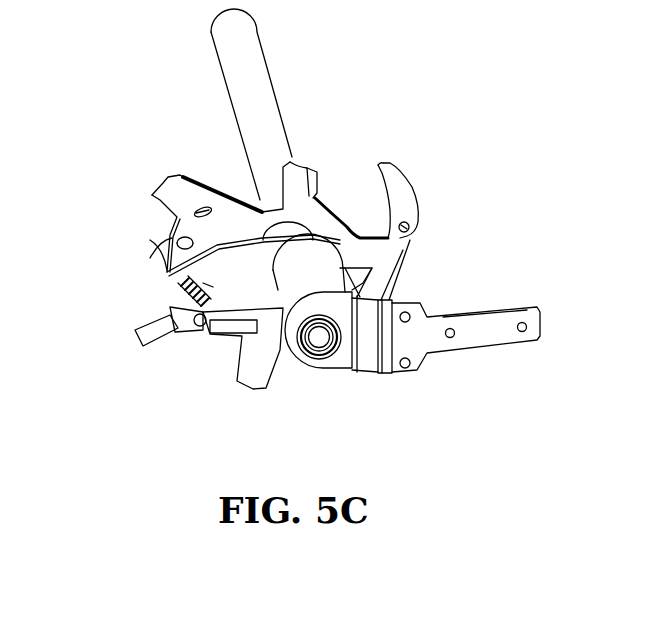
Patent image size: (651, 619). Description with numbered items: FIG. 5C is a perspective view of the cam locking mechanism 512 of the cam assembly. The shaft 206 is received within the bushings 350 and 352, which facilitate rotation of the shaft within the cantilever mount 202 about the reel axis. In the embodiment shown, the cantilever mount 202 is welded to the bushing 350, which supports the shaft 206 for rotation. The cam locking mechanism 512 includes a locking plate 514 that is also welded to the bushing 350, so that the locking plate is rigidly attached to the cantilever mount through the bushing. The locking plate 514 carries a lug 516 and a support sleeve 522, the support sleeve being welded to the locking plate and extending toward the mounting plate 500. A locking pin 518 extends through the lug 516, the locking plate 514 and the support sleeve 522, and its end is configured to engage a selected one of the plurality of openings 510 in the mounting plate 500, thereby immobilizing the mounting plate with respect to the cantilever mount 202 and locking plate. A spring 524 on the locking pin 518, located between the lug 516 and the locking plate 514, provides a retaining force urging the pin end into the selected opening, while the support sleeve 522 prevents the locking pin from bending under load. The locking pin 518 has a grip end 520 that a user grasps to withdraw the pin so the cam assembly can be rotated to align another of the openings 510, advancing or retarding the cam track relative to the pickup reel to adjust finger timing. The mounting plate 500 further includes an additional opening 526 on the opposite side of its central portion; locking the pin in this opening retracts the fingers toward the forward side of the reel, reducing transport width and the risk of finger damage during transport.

The shaft 206 is at (228, 60).
The locking plate 514 is at (250, 262).
The bushing 352 is at (300, 230).
The bushing 350 is at (303, 280).
The mounting plate 500 is at (397, 193).
The additional opening 526 is at (412, 238).
The cantilever mount 202 is at (388, 318).
The plurality of openings 510 is at (178, 249).
The support sleeve 522 is at (178, 257).
The spring 524 is at (178, 284).
The cam locking mechanism 512 is at (133, 302).
The lug 516 is at (168, 320).
The locking pin 518 is at (190, 330).
The grip end 520 is at (233, 328).